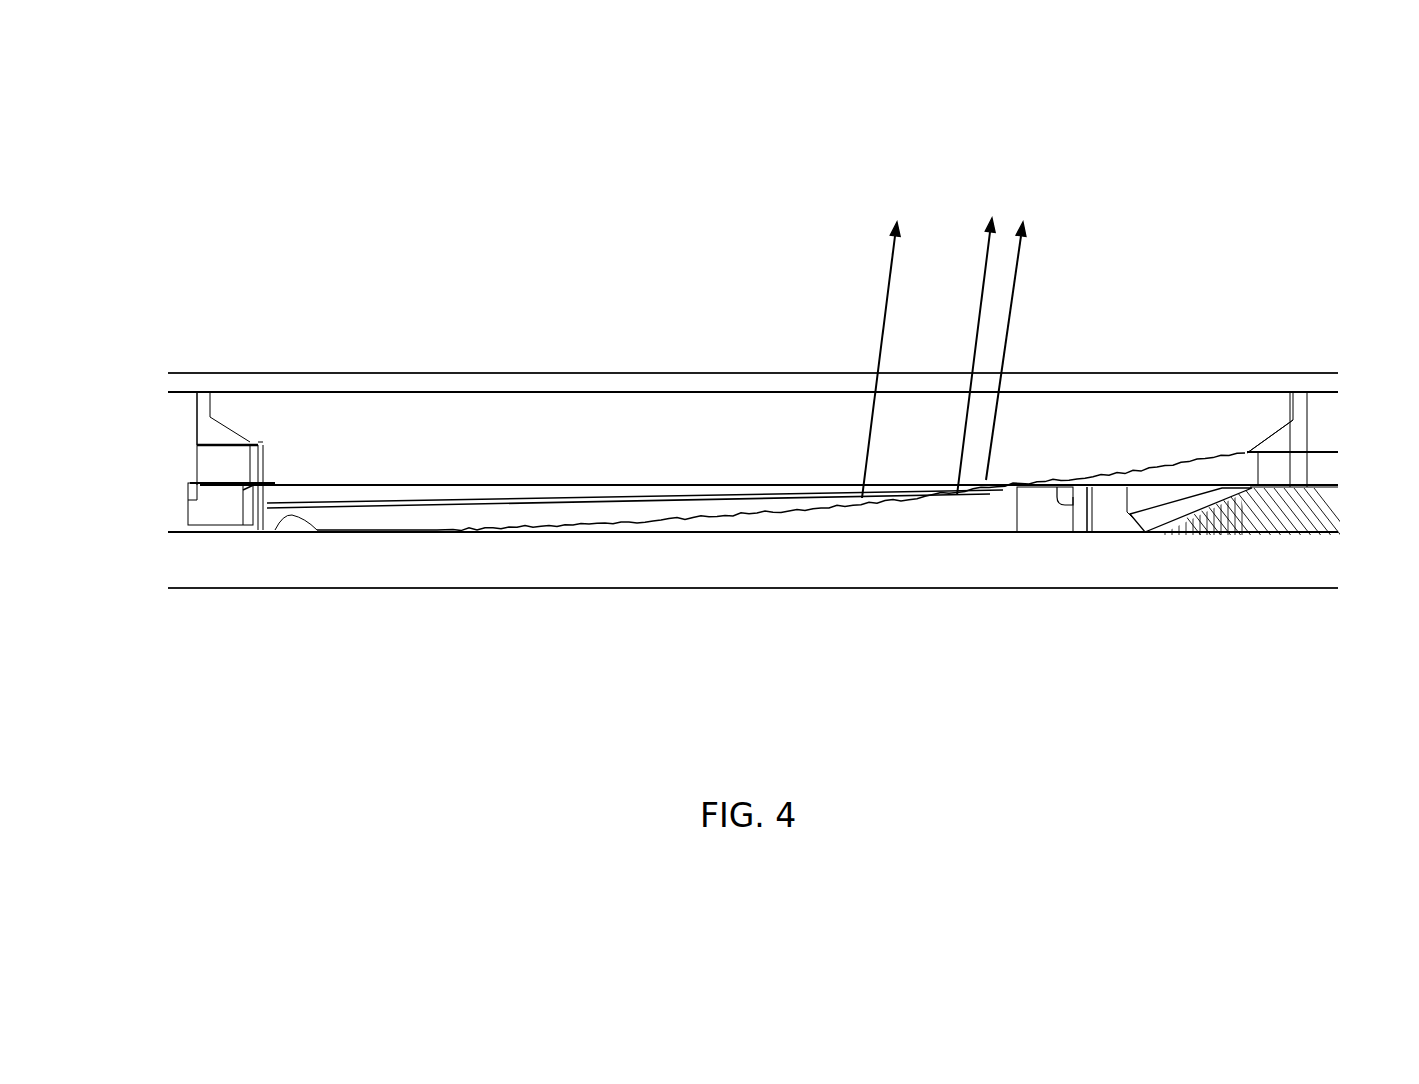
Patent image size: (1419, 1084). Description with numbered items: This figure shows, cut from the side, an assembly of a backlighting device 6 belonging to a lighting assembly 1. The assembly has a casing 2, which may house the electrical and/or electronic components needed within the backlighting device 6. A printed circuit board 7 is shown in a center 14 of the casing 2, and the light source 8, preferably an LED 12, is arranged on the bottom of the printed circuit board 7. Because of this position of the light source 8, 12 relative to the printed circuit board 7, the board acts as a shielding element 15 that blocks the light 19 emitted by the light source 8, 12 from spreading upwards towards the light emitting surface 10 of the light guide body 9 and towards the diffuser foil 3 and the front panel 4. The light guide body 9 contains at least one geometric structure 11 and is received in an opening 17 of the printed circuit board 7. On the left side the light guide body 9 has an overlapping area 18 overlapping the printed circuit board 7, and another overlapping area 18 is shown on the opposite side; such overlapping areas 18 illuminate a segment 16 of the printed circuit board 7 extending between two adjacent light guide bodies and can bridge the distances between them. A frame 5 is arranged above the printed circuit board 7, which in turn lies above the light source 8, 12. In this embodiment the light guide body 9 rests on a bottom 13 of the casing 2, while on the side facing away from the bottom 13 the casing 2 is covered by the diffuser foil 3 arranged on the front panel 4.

The lighting assembly 1 is at (753, 378).
The backlighting device 6 is at (782, 255).
The casing 2 is at (1020, 580).
The diffuser foil 3 is at (760, 388).
The front panel 4 is at (718, 372).
The frame 5 is at (205, 410).
The printed circuit board 7 is at (210, 465).
The light source 8 is at (264, 584).
The LED 12 is at (228, 513).
The light guide body 9 is at (607, 423).
The light emitting surface 10 is at (1113, 383).
The geometric structure 11 is at (754, 516).
The bottom 13 is at (1277, 535).
The center 14 is at (168, 467).
The shielding element 15 is at (205, 485).
The segment 16 is at (405, 530).
The opening 17 is at (189, 428).
The overlapping area 18 is at (1193, 432).
The light 19 is at (890, 253).